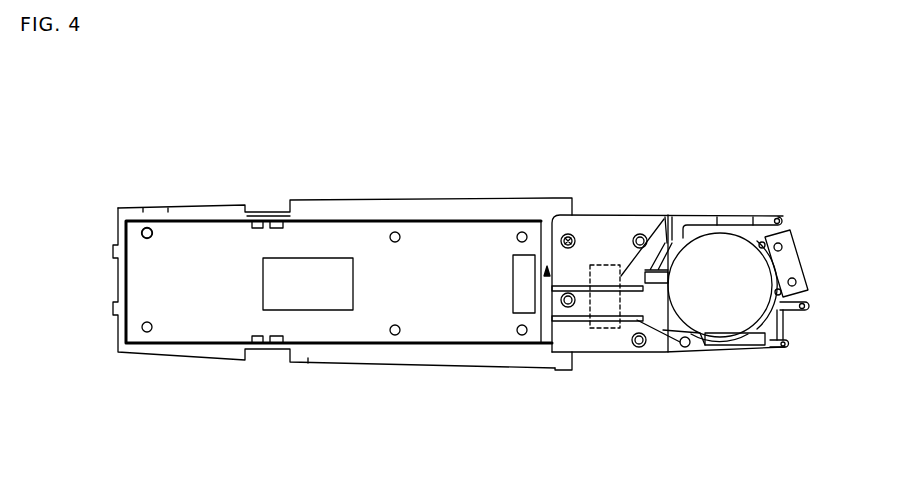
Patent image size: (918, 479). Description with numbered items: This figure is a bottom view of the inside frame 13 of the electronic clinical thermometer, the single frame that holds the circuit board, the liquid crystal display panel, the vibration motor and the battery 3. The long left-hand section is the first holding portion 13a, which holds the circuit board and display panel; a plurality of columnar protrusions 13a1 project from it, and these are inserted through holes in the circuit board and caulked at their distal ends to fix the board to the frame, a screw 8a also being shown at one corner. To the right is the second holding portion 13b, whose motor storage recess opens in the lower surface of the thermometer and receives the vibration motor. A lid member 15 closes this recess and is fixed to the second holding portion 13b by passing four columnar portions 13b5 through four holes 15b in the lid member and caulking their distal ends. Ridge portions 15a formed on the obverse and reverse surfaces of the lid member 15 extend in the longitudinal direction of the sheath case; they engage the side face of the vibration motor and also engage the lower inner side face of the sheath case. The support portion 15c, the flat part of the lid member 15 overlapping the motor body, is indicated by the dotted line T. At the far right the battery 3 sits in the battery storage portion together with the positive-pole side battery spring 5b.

The battery 3 is at (735, 310).
The positive-pole side battery spring 5b is at (787, 257).
The screw 8a is at (150, 240).
The inside frame 13 is at (428, 212).
The first holding portion 13a is at (541, 362).
The columnar protrusions 13a1 is at (142, 236).
The second holding portion 13b is at (663, 368).
The columnar portions 13b5 is at (574, 235).
The lid member 15 is at (613, 245).
The ridge portions 15a is at (637, 293).
The holes 15b is at (560, 237).
The support portion 15c is at (602, 307).
The dotted line T is at (668, 217).